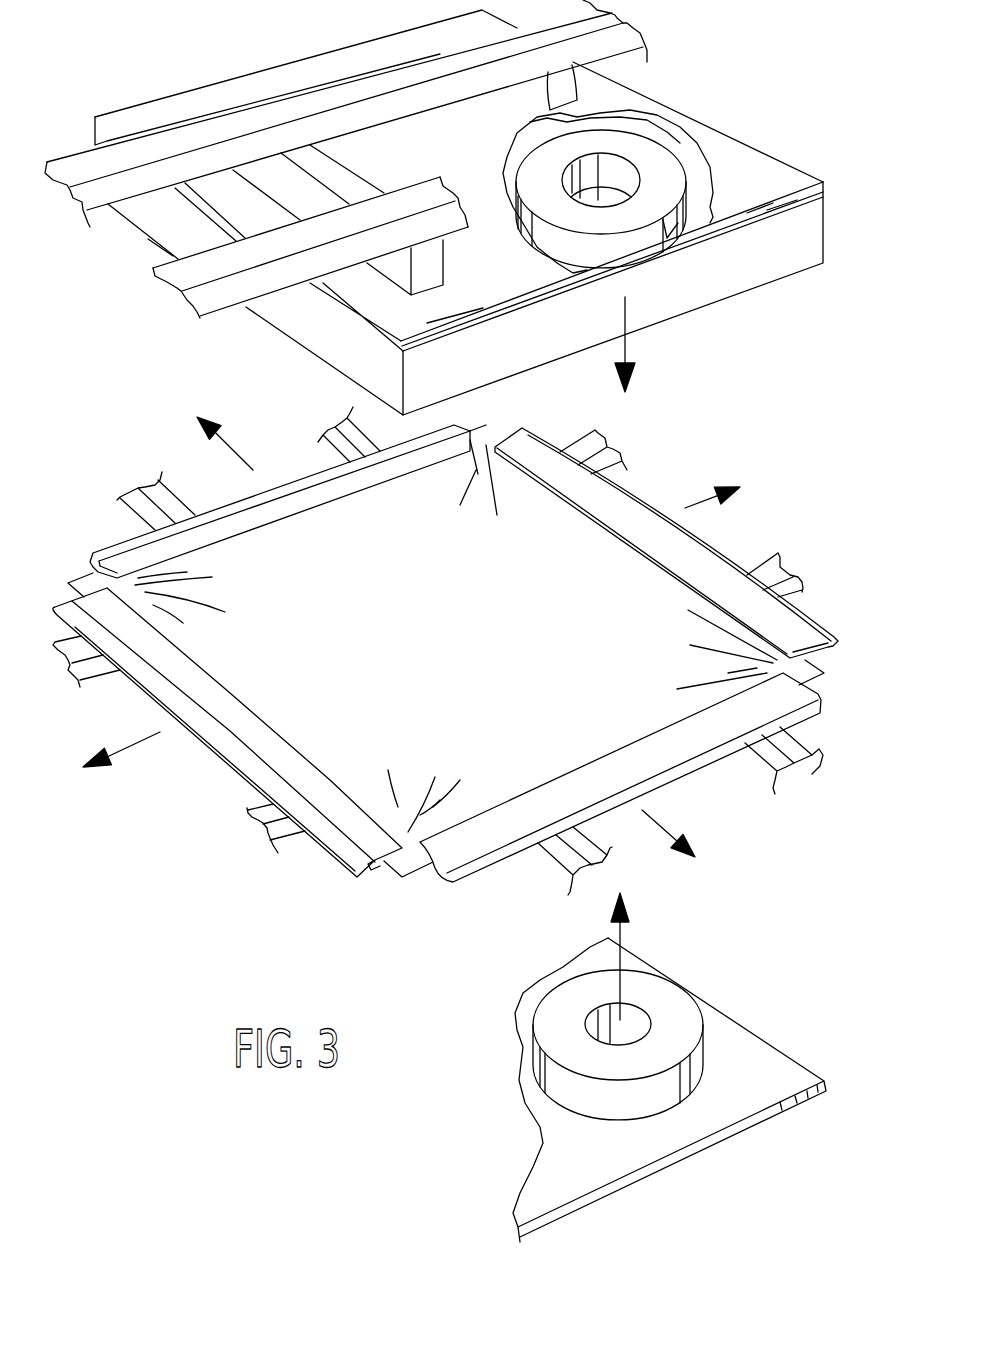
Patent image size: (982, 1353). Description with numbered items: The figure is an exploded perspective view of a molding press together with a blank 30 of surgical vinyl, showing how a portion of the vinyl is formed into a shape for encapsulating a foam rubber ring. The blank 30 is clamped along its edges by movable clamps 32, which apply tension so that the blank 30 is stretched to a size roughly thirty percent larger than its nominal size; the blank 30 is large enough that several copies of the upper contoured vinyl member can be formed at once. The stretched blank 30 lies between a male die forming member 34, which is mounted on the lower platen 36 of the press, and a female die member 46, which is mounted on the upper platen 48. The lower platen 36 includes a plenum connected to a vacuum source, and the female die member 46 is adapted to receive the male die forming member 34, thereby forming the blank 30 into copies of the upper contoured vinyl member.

The blank 30 is at (425, 645).
The movable clamps 32 is at (300, 492).
The male die forming member 34 is at (694, 1000).
The lower platen 36 is at (772, 1068).
The female die member 46 is at (657, 163).
The upper platen 48 is at (793, 197).